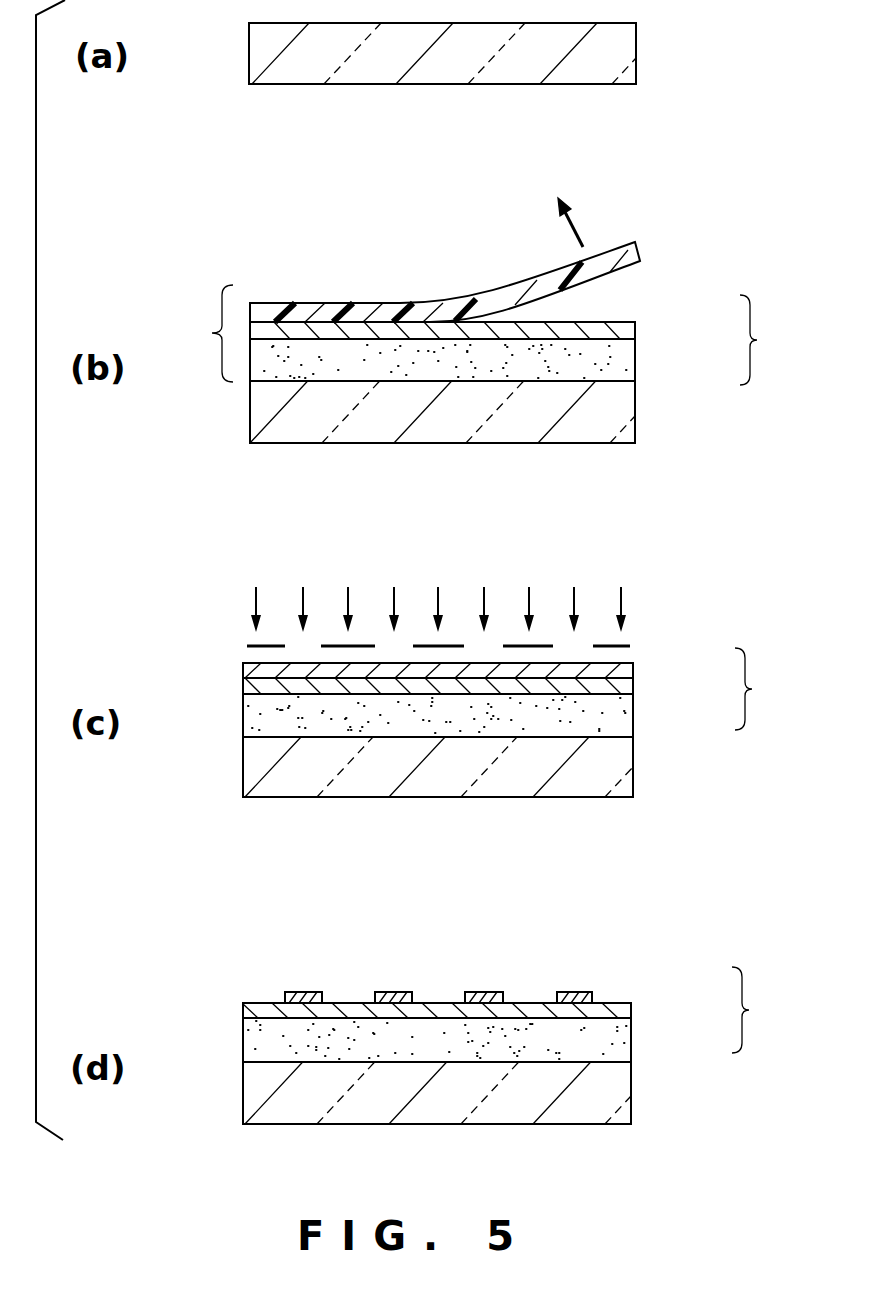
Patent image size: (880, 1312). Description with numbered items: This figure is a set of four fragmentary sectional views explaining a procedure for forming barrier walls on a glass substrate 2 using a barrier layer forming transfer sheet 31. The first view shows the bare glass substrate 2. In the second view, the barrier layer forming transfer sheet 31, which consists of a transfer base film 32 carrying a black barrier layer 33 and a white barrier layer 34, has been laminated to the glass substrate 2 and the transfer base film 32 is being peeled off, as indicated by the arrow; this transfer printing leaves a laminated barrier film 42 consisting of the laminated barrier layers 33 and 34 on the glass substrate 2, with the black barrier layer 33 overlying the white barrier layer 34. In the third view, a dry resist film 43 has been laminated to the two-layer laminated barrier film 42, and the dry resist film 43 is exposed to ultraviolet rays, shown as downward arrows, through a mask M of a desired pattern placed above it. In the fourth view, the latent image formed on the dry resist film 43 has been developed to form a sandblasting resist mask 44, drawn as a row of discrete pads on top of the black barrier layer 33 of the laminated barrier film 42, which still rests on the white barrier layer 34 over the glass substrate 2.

The glass substrate 2 is at (636, 50).
The barrier layer forming transfer sheet 31 is at (200, 333).
The transfer base film 32 is at (603, 250).
The black barrier layer 33 is at (630, 330).
The white barrier layer 34 is at (624, 362).
The laminated barrier film 42 is at (768, 674).
The dry resist film 43 is at (636, 665).
The sandblasting resist mask 44 is at (571, 988).
The mask M is at (258, 645).